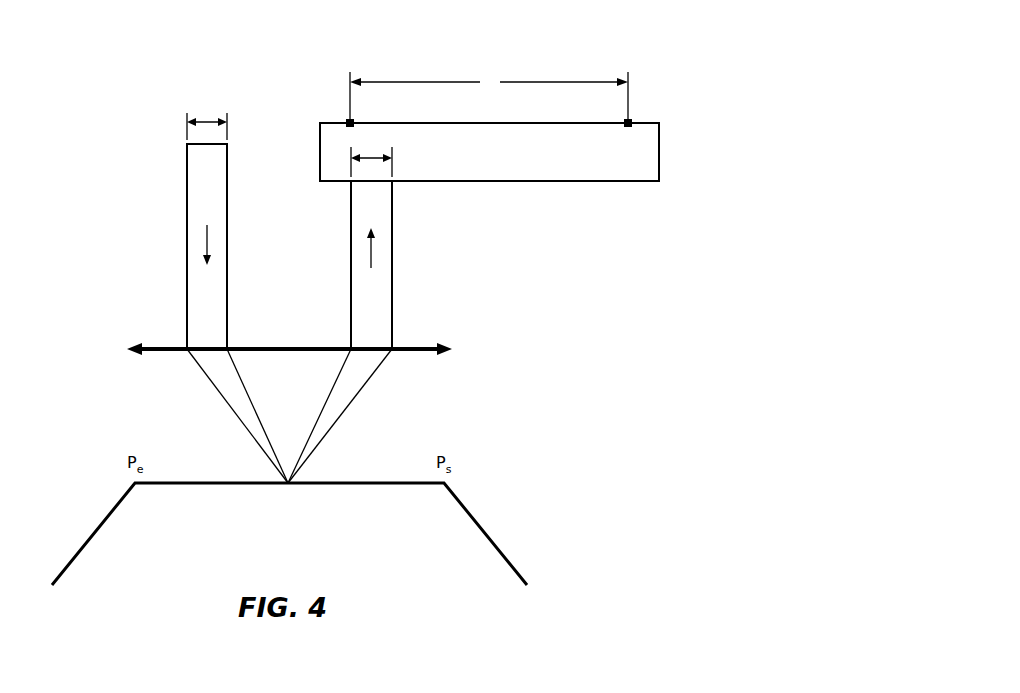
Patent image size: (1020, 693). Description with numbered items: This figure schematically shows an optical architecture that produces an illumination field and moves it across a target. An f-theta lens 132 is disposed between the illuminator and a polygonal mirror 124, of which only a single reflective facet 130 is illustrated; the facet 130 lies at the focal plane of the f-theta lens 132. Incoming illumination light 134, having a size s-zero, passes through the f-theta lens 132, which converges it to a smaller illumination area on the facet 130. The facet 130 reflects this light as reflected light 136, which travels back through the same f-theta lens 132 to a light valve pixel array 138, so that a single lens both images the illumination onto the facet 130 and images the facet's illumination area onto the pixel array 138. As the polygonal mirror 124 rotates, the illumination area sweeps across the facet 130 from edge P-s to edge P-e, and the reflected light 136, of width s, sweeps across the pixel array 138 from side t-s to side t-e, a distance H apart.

The polygonal mirror 124 is at (88, 493).
The reflective facet 130 is at (218, 481).
The f-theta lens 132 is at (160, 347).
The incoming illumination light 134 is at (187, 205).
The reflected light 136 is at (392, 245).
The light valve pixel array 138 is at (659, 150).